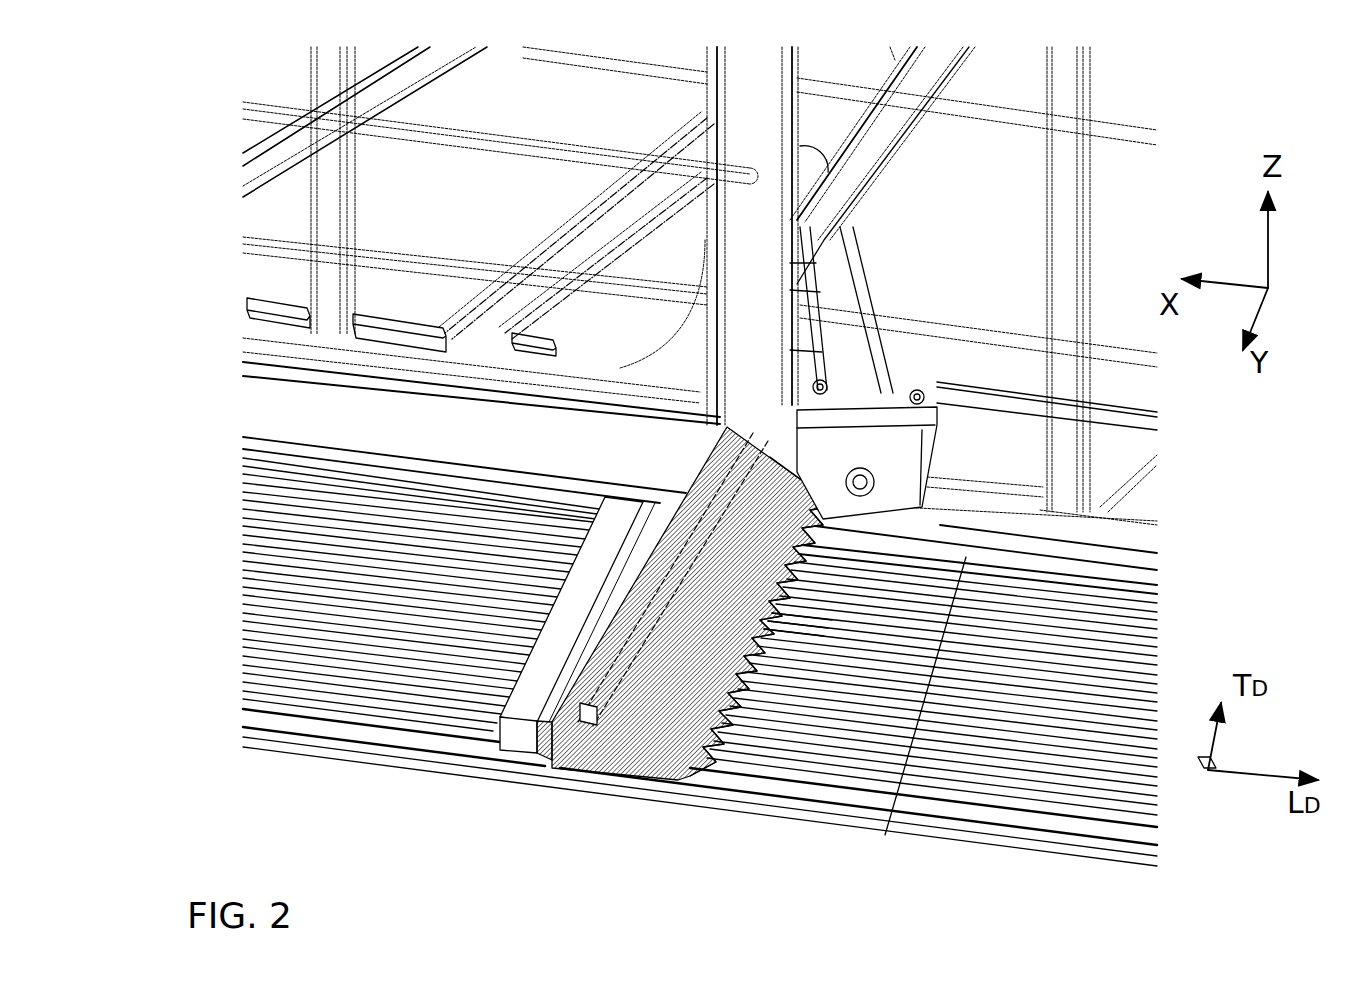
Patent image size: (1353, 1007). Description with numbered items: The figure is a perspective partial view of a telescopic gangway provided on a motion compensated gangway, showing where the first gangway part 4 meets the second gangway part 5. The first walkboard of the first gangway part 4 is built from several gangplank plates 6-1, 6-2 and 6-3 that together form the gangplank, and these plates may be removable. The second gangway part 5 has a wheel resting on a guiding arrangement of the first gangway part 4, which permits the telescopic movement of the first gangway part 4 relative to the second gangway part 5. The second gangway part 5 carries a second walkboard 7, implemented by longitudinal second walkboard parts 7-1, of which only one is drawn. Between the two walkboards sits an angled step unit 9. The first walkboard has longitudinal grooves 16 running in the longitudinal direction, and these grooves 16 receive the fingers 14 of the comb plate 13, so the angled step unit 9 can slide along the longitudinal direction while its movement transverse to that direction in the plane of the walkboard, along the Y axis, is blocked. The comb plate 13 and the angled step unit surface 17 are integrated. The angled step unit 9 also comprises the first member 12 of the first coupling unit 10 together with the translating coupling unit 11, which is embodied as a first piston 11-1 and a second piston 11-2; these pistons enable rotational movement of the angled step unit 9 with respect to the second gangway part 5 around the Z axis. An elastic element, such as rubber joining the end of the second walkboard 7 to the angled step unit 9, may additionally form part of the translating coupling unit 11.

The first gangway part 4 is at (1190, 563).
The second gangway part 5 is at (238, 315).
The gangplank plate 6-1 is at (986, 770).
The gangplank plate 6-2 is at (860, 755).
The gangplank plate 6-3 is at (312, 682).
The second walkboard 7 is at (272, 418).
The second walkboard part 7-1 is at (292, 401).
The angled step unit 9 is at (741, 419).
The first coupling unit 10 is at (700, 780).
The translating coupling unit 11 is at (483, 753).
The first piston 11-1 is at (580, 520).
The second piston 11-2 is at (510, 647).
The first member 12 is at (829, 521).
The comb plate 13 is at (814, 484).
The fingers 14 is at (751, 695).
The grooves 16 is at (808, 620).
The angled step unit surface 17 is at (646, 716).